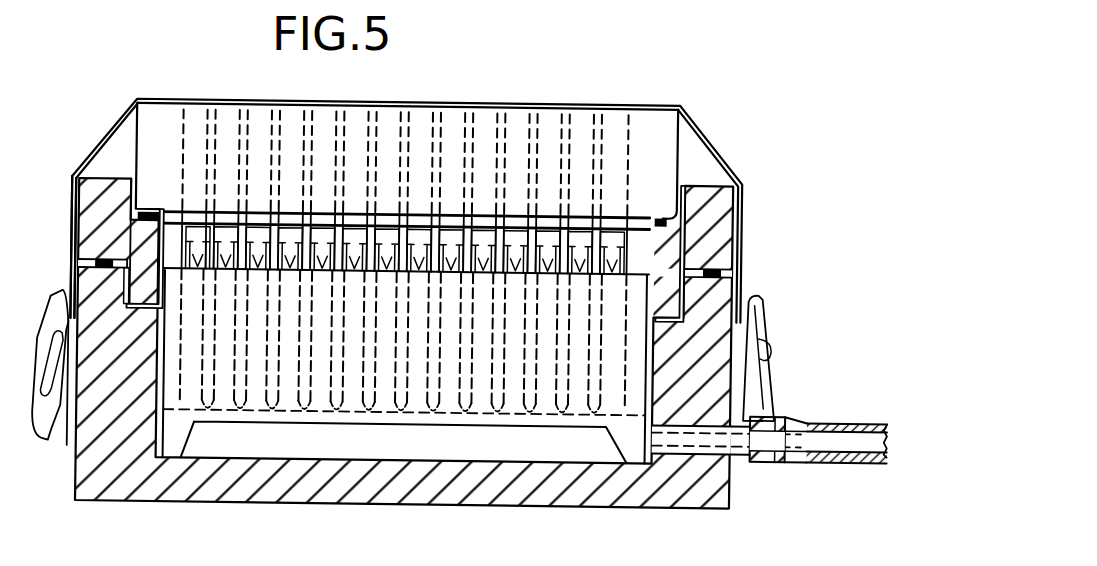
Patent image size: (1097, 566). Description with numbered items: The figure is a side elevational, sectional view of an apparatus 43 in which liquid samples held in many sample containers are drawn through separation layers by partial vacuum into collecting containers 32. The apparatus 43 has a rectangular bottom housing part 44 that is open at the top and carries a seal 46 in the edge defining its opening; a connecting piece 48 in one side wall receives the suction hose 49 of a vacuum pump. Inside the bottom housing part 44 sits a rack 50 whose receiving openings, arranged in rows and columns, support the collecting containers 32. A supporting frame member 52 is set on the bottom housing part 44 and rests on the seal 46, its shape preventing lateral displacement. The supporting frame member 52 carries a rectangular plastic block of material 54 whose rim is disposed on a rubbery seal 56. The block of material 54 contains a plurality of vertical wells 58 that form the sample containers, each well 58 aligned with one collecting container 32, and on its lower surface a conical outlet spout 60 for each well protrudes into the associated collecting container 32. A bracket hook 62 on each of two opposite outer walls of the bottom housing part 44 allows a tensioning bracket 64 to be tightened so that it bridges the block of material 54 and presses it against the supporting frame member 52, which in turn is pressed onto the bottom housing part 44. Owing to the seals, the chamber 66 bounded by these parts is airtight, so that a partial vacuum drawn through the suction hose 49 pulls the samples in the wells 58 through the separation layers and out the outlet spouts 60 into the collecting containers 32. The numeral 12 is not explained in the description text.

The electrical connector 12 is at (67, 555).
The collecting container 32 is at (251, 400).
The apparatus 43 is at (400, 245).
The bottom housing part 44 is at (701, 405).
The seal 46 is at (713, 254).
The connecting piece 48 is at (772, 424).
The suction hose 49 is at (856, 445).
The rack 50 is at (337, 417).
The supporting frame member 52 is at (708, 212).
The block of material 54 is at (669, 96).
The rubbery seal 56 is at (681, 171).
The well 58 is at (177, 129).
The outlet spout 60 is at (322, 250).
The bracket hook 62 is at (20, 362).
The tensioning bracket 64 is at (111, 116).
The chamber 66 is at (67, 219).